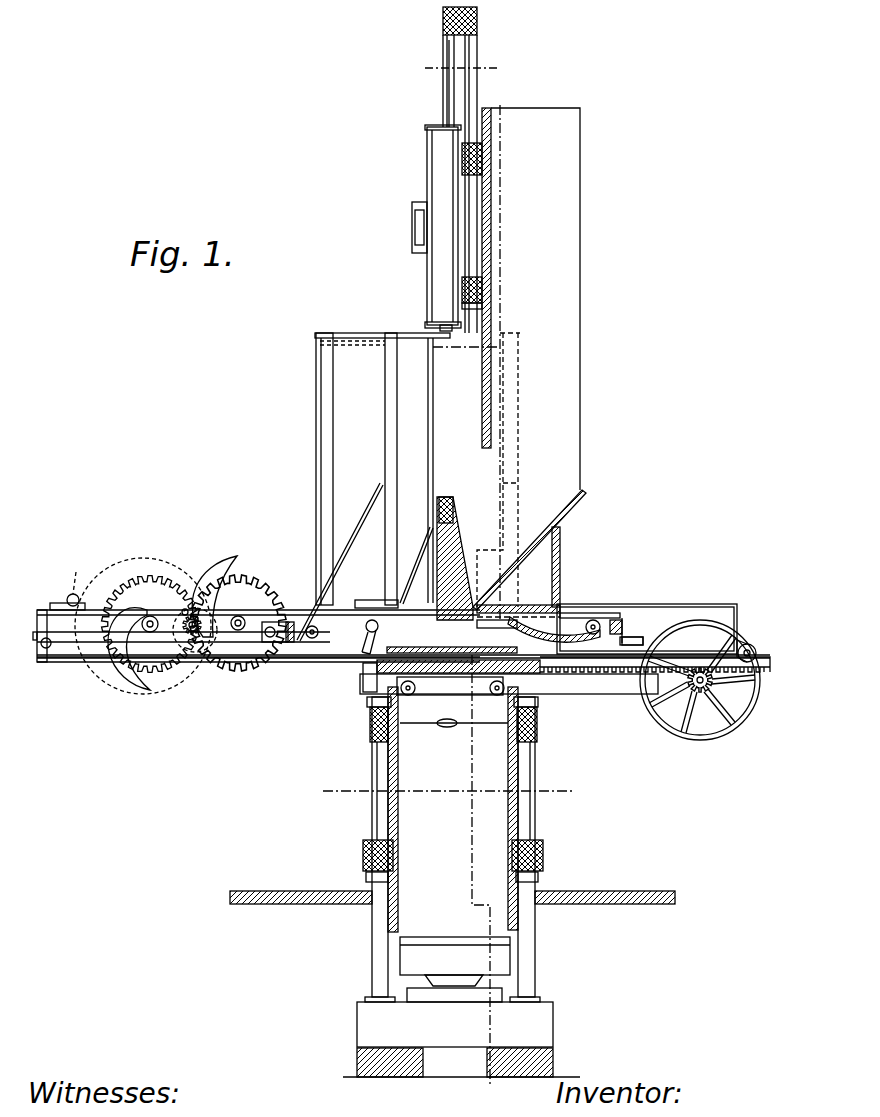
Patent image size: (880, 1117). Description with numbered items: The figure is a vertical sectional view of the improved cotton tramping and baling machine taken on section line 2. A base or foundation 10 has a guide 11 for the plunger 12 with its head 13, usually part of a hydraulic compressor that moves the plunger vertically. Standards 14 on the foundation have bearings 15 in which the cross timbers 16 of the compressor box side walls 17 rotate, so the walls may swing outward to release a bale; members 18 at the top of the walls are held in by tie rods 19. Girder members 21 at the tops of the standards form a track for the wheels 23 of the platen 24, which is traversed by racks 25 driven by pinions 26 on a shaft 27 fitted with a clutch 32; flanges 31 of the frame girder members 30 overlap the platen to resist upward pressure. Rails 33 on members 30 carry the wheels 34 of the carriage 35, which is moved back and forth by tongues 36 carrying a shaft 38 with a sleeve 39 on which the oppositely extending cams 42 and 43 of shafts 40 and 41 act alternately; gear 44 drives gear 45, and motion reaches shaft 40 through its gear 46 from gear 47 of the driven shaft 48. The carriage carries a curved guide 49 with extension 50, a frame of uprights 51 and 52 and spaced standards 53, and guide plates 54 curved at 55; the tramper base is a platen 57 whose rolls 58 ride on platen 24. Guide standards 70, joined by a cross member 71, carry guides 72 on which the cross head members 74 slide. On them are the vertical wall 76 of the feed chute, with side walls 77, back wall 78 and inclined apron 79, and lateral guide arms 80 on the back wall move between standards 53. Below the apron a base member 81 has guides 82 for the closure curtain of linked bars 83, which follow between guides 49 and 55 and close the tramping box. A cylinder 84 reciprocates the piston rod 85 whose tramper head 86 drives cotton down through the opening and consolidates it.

The section line 2 is at (448, 599).
The base or foundation 10 is at (461, 1039).
The guide 11 is at (420, 1000).
The plunger 12 is at (455, 988).
The head 13 is at (455, 956).
The standards 14 is at (372, 812).
The bearings 15 is at (363, 848).
The cross timbers 16 is at (366, 875).
The side walls 17 is at (377, 800).
The members 18 is at (370, 735).
The tie rods 19 is at (460, 728).
The girder members 21 is at (362, 690).
The wheels 23 is at (492, 692).
The platen 24 is at (377, 668).
The racks 25 is at (640, 674).
The pinions 26 is at (757, 658).
The shaft 27 is at (695, 692).
The frame girder members 30 is at (690, 605).
The flanges 31 is at (312, 660).
The clutch 32 is at (730, 730).
The rails 33 is at (645, 640).
The wheels 34 is at (598, 620).
The carriage 35 is at (290, 620).
The tongues 36 is at (240, 665).
The shaft 38 is at (192, 635).
The sleeve 39 is at (184, 608).
The shaft 40 is at (149, 616).
The shaft 41 is at (215, 620).
The cam 42 is at (118, 680).
The cam 43 is at (218, 568).
The gear 44 is at (150, 590).
The gear 45 is at (250, 585).
The gear 46 is at (140, 560).
The gear 47 is at (79, 578).
The shaft 48 is at (70, 603).
The curved guide 49 is at (540, 606).
The extension 50 is at (643, 646).
The uprights 51 is at (318, 520).
The uprights 52 is at (505, 483).
The standards 53 is at (382, 478).
The guide plates 54 is at (520, 450).
The curved lower end 55 is at (565, 610).
The platen 57 is at (390, 635).
The rolls 58 is at (452, 647).
The guide standards 70 is at (477, 60).
The cross member 71 is at (477, 30).
The guides 72 is at (447, 101).
The cross head members 74 is at (482, 165).
The vertical wall 76 is at (486, 300).
The side walls 77 is at (570, 372).
The back wall 78 is at (428, 416).
The inclined wall or apron 79 is at (560, 520).
The lateral guide arms 80 is at (400, 605).
The base member 81 is at (552, 570).
The guides 82 is at (497, 631).
The bars 83 is at (585, 625).
The cylinder 84 is at (427, 152).
The piston rod 85 is at (440, 328).
The tramper head 86 is at (458, 560).